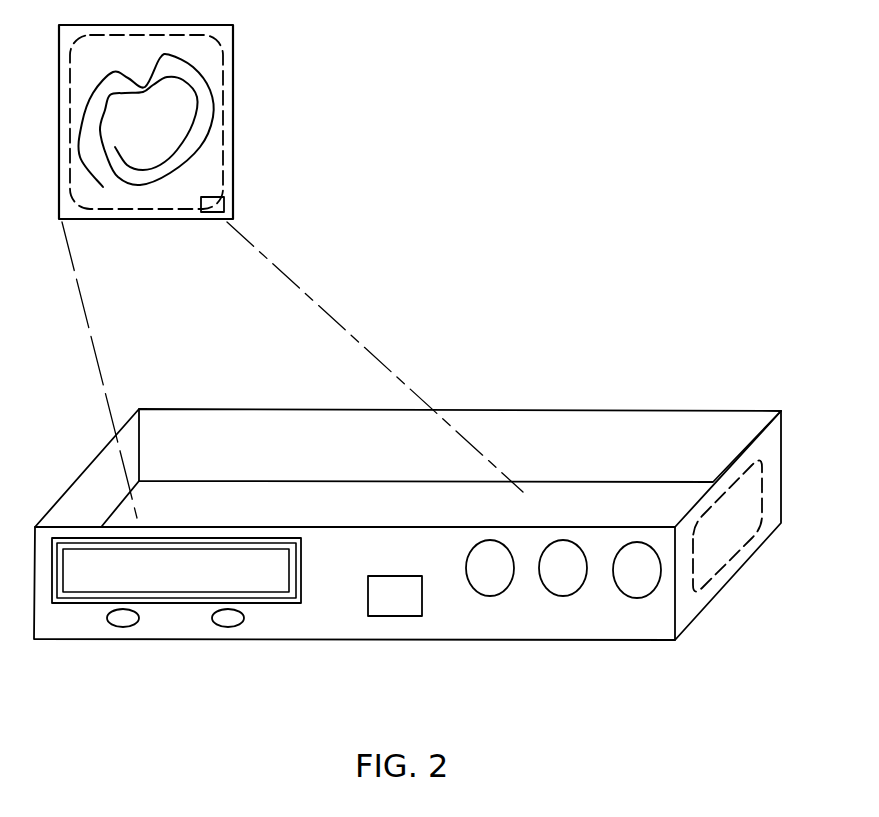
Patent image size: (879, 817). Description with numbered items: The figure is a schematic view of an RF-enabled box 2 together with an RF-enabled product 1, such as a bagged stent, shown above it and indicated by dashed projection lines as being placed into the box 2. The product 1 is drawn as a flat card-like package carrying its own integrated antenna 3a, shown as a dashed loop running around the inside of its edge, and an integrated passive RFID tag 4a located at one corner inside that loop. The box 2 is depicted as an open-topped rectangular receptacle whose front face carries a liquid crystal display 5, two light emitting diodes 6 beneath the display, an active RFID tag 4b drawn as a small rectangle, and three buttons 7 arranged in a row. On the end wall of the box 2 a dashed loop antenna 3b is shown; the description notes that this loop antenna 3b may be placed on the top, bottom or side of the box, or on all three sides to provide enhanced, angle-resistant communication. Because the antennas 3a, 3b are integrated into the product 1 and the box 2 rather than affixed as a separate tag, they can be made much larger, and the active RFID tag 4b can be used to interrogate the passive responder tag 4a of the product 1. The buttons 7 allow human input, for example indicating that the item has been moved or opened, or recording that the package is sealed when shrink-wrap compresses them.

The RF-enabled product 1 is at (233, 93).
The RF-enabled box 2 is at (83, 470).
The integrated antenna 3a is at (212, 163).
The loop antenna 3b is at (728, 553).
The passive RFID tag 4a is at (224, 207).
The active RFID tag 4b is at (395, 608).
The liquid crystal display 5 is at (90, 585).
The light emitting diodes 6 is at (228, 622).
The buttons 7 is at (493, 587).